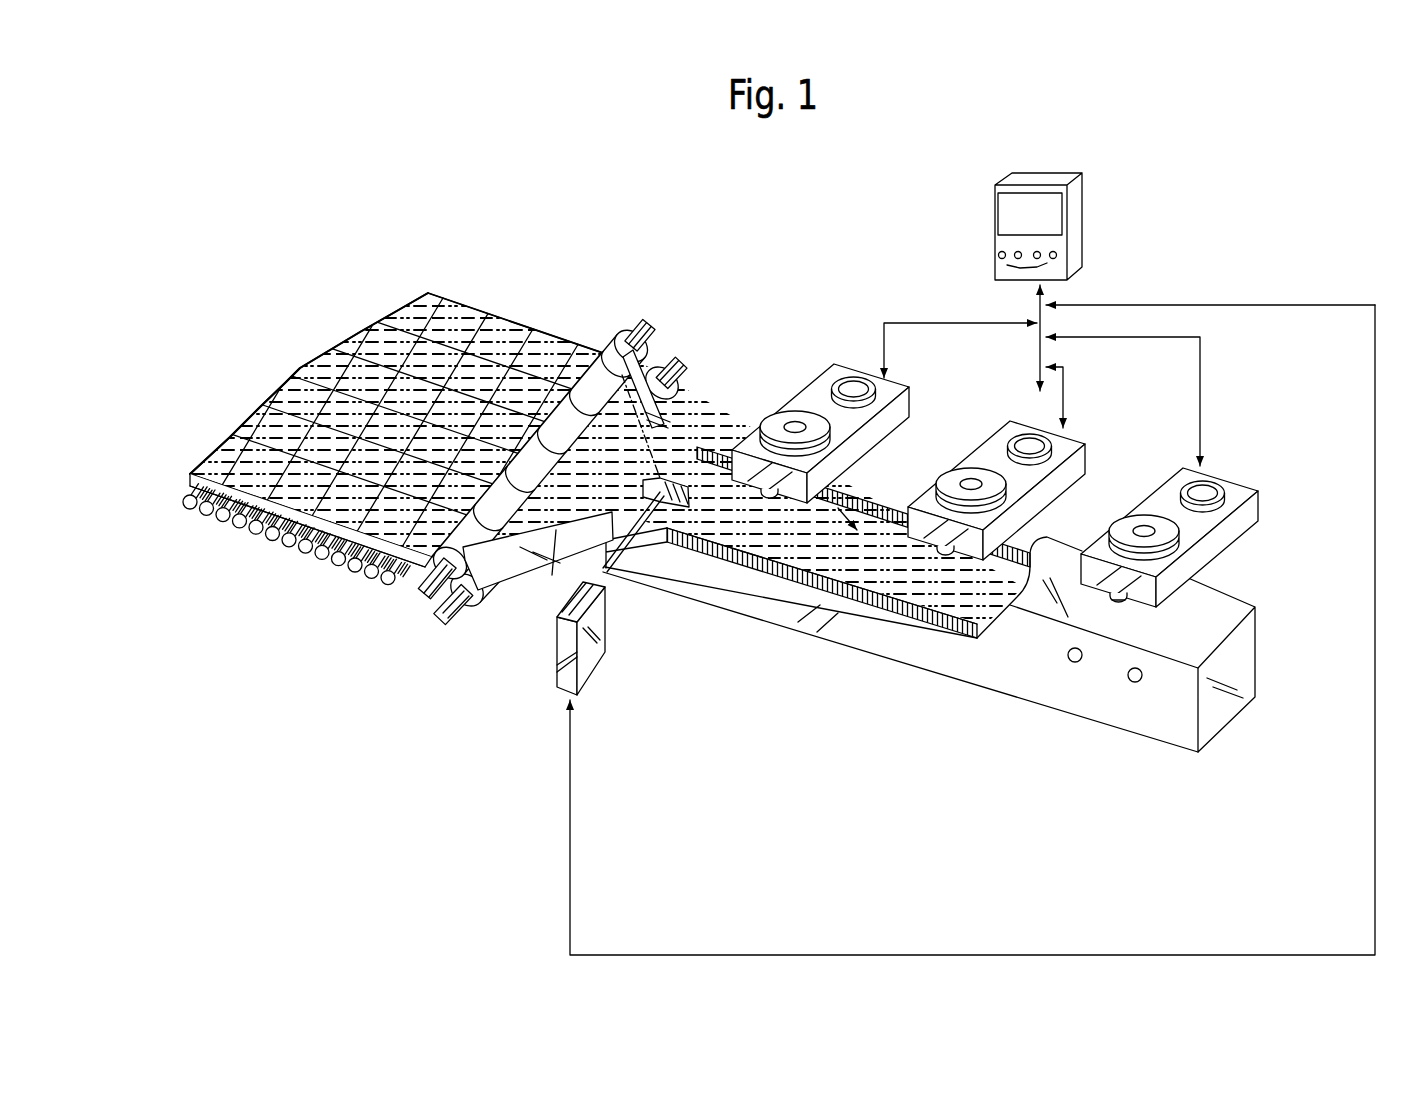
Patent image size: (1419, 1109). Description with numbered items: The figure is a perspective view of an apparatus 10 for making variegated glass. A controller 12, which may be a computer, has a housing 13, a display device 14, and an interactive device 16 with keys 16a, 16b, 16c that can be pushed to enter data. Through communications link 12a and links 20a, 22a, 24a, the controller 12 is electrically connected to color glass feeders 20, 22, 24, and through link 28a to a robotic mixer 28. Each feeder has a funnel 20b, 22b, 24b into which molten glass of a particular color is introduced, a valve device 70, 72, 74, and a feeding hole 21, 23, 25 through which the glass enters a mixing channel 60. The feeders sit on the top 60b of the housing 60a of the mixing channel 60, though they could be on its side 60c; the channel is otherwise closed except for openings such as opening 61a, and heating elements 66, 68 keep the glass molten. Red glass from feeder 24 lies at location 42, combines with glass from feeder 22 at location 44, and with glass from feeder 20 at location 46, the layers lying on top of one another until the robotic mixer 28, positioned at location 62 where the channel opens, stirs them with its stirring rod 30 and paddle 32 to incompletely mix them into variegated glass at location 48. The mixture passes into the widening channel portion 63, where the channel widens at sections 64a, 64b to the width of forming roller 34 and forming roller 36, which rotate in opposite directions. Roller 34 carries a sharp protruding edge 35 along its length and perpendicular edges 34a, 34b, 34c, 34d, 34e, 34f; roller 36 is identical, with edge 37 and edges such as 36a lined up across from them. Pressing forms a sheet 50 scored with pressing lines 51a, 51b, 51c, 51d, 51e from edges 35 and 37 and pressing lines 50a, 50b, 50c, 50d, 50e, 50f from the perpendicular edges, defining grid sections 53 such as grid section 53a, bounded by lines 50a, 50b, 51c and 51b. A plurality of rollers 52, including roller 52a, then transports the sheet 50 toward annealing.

The apparatus 10 is at (838, 193).
The controller 12 is at (1038, 205).
The communications link 12a is at (1035, 307).
The housing 13 is at (1043, 176).
The display device 14 is at (1035, 206).
The interactive device 16 is at (1036, 240).
The key 16a is at (998, 255).
The key 16b is at (1016, 252).
The control button 16c is at (1040, 251).
The color glass feeder 20 is at (820, 380).
The communications link 20a is at (947, 318).
The funnel 20b is at (853, 377).
The feeding hole 21 is at (780, 495).
The color glass feeder 22 is at (996, 460).
The communications link 22a is at (1065, 407).
The funnel 22b is at (1027, 434).
The feeding hole 23 is at (1013, 532).
The color glass feeder 24 is at (1173, 545).
The communications link 24a is at (1138, 342).
The funnel 24b is at (1207, 484).
The feeding hole 25 is at (1130, 605).
The robotic mixer 28 is at (560, 635).
The communications link 28a is at (1285, 300).
The stirring rod 30 is at (600, 572).
The paddle 32 is at (693, 452).
The forming roller 34 is at (520, 469).
The sharp protruding edge 34a is at (433, 565).
The sharp protruding edge 34b is at (463, 580).
The sharp protruding edge 34c is at (522, 462).
The sharp protruding edge 34d is at (553, 425).
The sharp protruding edge 34e is at (583, 385).
The sharp protruding edge 34f is at (598, 398).
The sharp protruding edge 35 is at (352, 335).
The forming roller 36 is at (728, 522).
The sharp protruding edge 36a is at (475, 603).
The sharp protruding edge 37 is at (476, 595).
The location 42 is at (978, 618).
The location 44 is at (860, 572).
The location 46 is at (700, 520).
The location 48 is at (507, 527).
The sheet 50 is at (396, 363).
The pressing line 50a is at (302, 550).
The pressing line 50b is at (266, 404).
The pressing line 50c is at (313, 393).
The pressing line 50d is at (340, 357).
The pressing line 50e is at (403, 328).
The pressing line 50f is at (436, 292).
The pressing line 51a is at (273, 400).
The pressing line 51b is at (440, 400).
The pressing line 51c is at (488, 312).
The pressing line 51d is at (530, 332).
The pressing line 51e is at (576, 346).
The rollers 52 is at (269, 533).
The pin tip 52a is at (187, 512).
The grid sections 53 is at (287, 534).
The grid section 53a is at (262, 523).
The mixing channel 60 is at (929, 631).
The housing 60a is at (1030, 683).
The top 60b is at (1038, 600).
The side 60c is at (948, 657).
The opening 61a is at (1118, 603).
The location 62 is at (646, 562).
The widening channel portion 63 is at (560, 497).
The section 64a is at (667, 432).
The section 64b is at (553, 577).
The heating element 66 is at (1080, 661).
The heating element 68 is at (1139, 682).
The valve device 70 is at (793, 424).
The valve device 72 is at (967, 472).
The valve device 74 is at (1141, 518).